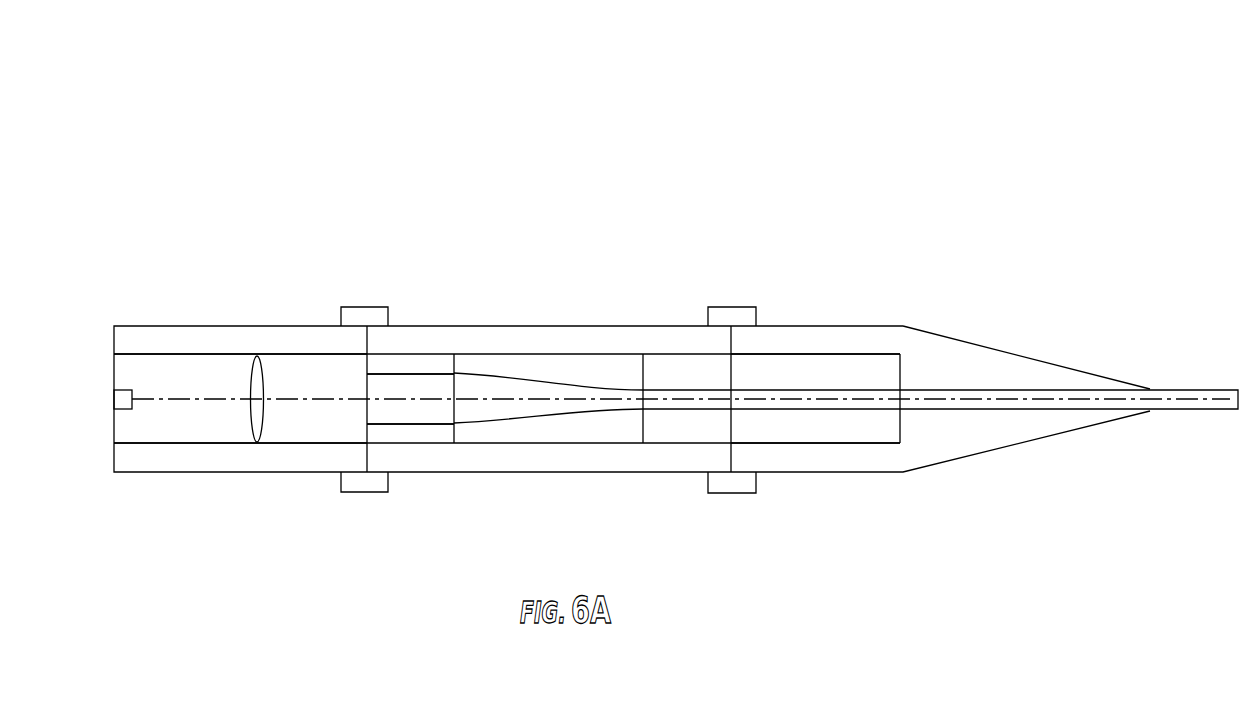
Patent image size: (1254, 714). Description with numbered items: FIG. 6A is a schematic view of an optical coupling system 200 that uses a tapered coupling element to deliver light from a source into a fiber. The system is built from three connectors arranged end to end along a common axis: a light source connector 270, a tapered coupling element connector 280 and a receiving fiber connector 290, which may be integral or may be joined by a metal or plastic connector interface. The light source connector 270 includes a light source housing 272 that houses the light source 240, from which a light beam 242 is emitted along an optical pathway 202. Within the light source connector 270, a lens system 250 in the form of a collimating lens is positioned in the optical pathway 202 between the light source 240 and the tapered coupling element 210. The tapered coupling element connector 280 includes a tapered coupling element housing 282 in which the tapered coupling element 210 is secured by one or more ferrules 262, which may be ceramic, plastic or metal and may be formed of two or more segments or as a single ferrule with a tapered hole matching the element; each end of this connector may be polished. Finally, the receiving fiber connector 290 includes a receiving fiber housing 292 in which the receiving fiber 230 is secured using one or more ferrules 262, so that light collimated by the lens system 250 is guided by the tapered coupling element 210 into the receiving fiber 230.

The optical coupling system 200 is at (740, 148).
The optical pathway 202 is at (203, 398).
The tapered coupling element 210 is at (523, 358).
The receiving fiber 230 is at (883, 395).
The light source 240 is at (113, 400).
The light beam 242 is at (182, 414).
The lens system 250 is at (245, 343).
The ferrule 262 is at (690, 365).
The light source connector 270 is at (347, 262).
The light source housing 272 is at (302, 340).
The tapered coupling element connector 280 is at (508, 250).
The tapered coupling element housing 282 is at (422, 343).
The receiving fiber connector 290 is at (789, 276).
The receiving fiber housing 292 is at (833, 343).